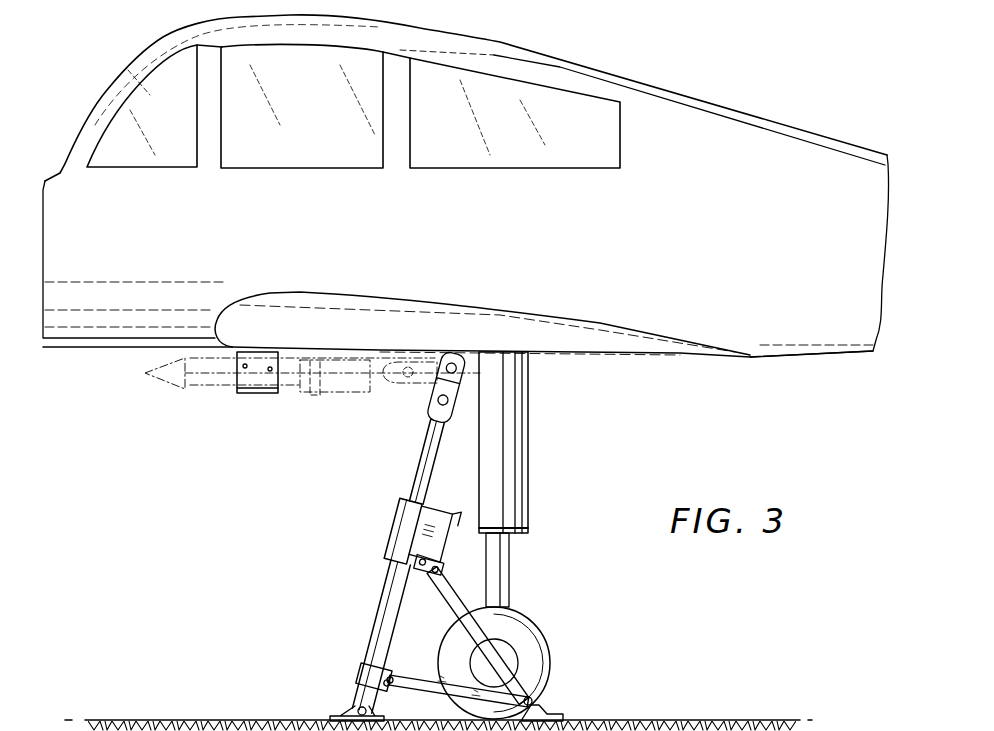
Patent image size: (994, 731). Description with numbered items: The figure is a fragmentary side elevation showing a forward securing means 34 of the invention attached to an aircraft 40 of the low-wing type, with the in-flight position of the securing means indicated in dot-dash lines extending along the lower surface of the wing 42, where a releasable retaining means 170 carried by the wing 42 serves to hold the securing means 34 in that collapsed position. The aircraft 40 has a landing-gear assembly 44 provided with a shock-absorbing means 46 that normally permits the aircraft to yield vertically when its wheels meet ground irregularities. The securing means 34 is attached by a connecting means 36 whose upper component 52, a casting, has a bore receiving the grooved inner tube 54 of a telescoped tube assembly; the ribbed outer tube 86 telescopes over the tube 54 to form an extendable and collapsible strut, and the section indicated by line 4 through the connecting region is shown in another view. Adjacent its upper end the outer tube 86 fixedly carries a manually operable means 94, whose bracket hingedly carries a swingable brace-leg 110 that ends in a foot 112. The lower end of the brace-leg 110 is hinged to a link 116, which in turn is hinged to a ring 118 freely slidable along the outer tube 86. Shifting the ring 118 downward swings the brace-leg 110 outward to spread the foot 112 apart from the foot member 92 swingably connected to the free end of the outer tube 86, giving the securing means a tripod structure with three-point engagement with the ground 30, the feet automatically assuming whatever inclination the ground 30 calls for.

The section line 4- 4 is at (486, 348).
The ground 30 is at (681, 700).
The forward securing means 34 is at (408, 474).
The connecting means 36 is at (470, 376).
The aircraft 40 is at (518, 40).
The wing 42 is at (553, 322).
The landing-gear assembly 44 is at (527, 586).
The shock-absorbing means 46 is at (515, 450).
The upper component 52 is at (430, 412).
The tube 54 is at (430, 440).
The outer tube 86 is at (388, 589).
The foot member 92 is at (333, 716).
The manually operable means 94 is at (385, 540).
The brace-leg 110 is at (547, 660).
The foot 112 is at (555, 720).
The link 116 is at (423, 663).
The ring 118 is at (360, 671).
The releasable retaining means 170 is at (262, 393).